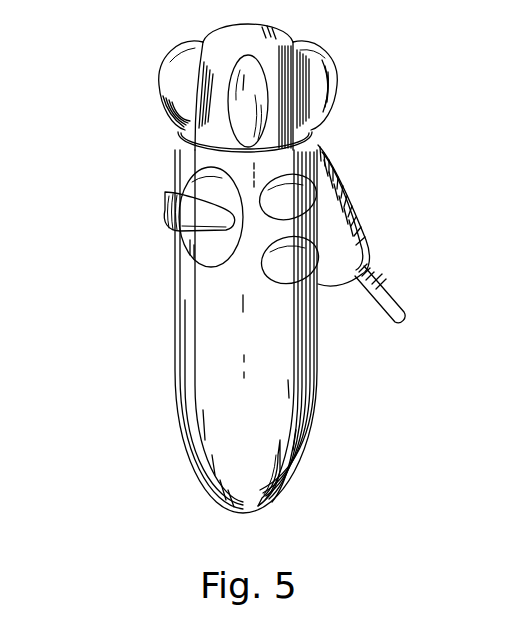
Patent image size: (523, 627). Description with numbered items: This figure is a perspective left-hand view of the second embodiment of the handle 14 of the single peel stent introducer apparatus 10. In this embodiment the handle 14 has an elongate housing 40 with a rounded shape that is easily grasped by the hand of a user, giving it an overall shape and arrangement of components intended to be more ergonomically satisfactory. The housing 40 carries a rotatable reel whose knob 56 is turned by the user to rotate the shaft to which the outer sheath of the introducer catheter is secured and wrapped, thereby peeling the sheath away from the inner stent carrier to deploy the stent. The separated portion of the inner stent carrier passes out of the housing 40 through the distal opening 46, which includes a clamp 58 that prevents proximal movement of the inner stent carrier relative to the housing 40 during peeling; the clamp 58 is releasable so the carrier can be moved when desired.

The single peel stent introducer apparatus 10 is at (134, 95).
The handle 14 is at (136, 144).
The housing 40 is at (175, 360).
The distal opening 46 is at (165, 216).
The knob 56 is at (337, 90).
The clamp 58 is at (178, 192).